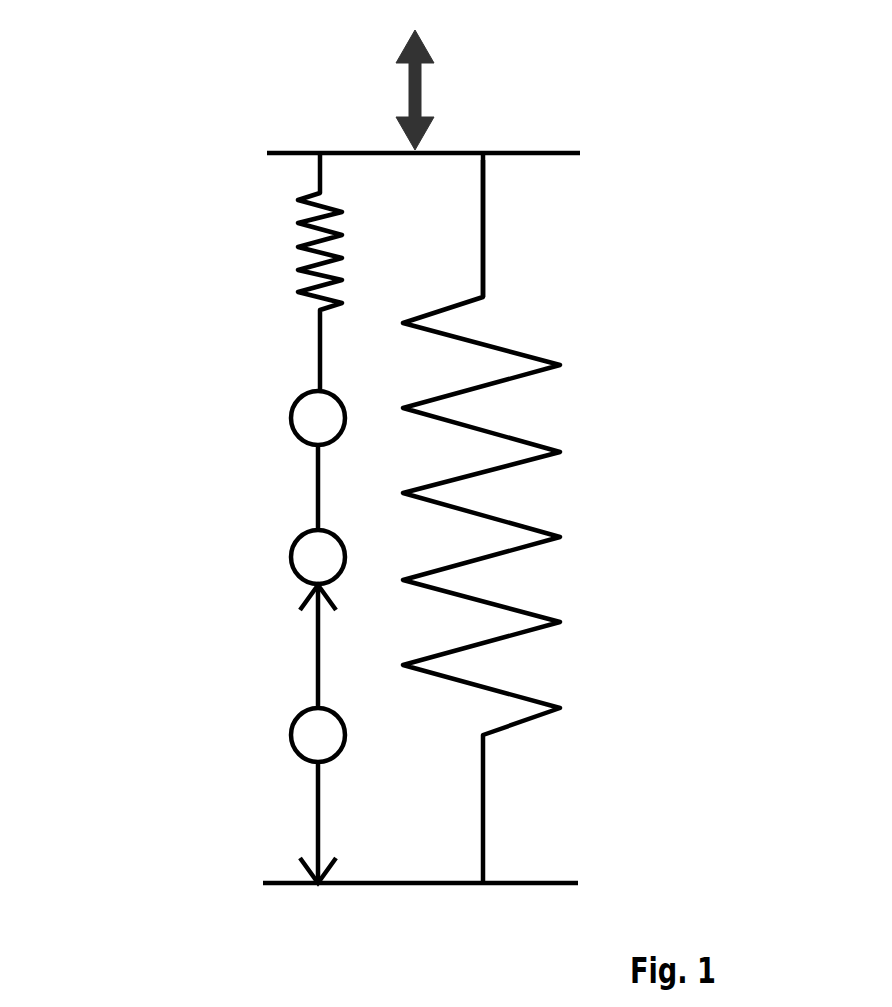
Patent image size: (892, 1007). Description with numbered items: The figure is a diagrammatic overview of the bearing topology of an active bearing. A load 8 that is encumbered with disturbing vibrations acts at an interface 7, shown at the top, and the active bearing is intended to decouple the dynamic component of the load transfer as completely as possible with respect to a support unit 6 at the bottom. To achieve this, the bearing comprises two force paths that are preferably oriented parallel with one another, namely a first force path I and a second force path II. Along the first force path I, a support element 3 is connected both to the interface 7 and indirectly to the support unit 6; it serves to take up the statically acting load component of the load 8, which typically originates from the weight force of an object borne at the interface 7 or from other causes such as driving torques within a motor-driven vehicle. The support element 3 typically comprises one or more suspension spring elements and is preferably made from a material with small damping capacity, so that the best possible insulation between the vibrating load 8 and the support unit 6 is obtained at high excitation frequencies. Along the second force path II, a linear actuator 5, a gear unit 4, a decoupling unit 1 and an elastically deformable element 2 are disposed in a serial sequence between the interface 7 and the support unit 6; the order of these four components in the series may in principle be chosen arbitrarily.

The decoupling unit 1 is at (265, 423).
The elastically deformable element 2 is at (265, 248).
The support element 3 is at (550, 515).
The gear unit 4 is at (265, 560).
The linear actuator 5 is at (265, 735).
The support unit 6 is at (413, 895).
The interface 7 is at (512, 135).
The load 8 is at (430, 70).
The first force path I is at (490, 250).
The second force path II is at (318, 495).